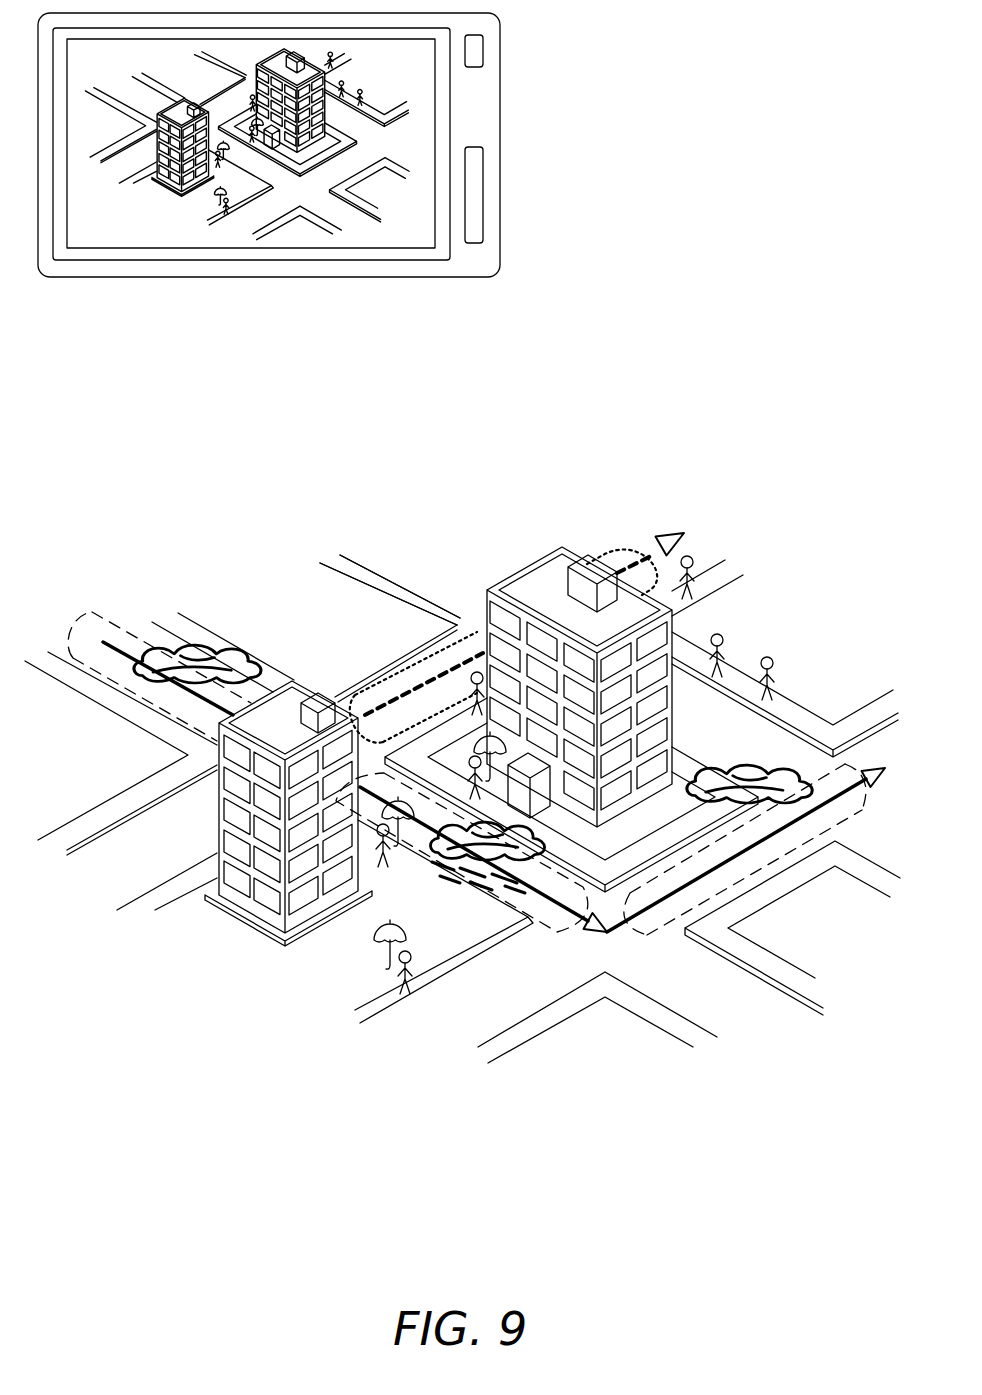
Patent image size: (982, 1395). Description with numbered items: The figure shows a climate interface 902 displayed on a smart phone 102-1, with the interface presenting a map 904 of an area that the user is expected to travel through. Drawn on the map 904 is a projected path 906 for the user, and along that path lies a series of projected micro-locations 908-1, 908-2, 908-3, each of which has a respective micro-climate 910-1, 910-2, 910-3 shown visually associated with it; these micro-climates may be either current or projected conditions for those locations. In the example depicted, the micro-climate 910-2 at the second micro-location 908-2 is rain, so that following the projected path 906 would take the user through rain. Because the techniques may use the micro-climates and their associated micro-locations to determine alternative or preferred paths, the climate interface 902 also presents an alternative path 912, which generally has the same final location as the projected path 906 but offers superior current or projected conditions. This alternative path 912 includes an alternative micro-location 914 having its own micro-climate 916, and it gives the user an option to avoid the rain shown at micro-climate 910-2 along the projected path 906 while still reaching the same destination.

The smart phone 102-1 is at (500, 67).
The climate interface 902 is at (405, 238).
The map 904 is at (757, 457).
The projected path 906 is at (138, 663).
The projected micro-location 908-1 is at (150, 700).
The projected micro-location 908-2 is at (533, 920).
The projected micro-location 908-3 is at (757, 873).
The micro-climate 910-1 is at (220, 628).
The micro-climate 910-2 is at (409, 892).
The micro-climate 910-3 is at (782, 738).
The alternative path 912 is at (653, 553).
The alternative micro-location 914 is at (603, 553).
The micro-climate 916 is at (408, 594).